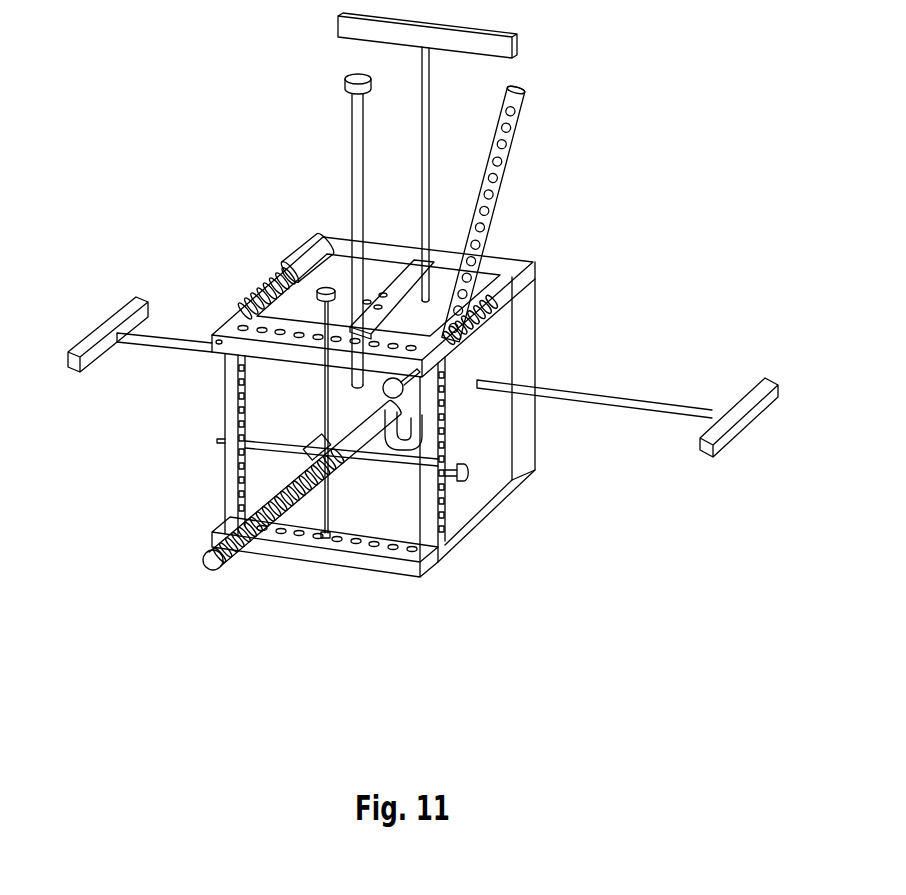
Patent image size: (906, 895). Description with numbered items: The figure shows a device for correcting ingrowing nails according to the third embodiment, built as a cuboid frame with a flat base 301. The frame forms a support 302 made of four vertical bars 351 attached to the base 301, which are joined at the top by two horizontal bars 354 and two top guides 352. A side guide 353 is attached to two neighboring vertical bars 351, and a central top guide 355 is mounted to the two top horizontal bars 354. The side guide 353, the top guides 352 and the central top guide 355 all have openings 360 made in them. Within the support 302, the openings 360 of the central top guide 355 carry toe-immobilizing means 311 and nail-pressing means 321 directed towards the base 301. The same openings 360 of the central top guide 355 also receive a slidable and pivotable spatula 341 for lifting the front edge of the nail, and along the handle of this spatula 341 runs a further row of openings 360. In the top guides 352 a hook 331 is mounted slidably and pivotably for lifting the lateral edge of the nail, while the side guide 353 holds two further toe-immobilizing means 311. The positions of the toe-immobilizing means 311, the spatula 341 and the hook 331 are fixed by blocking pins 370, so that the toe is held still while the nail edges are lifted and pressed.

The flat base 301 is at (455, 493).
The support 302 is at (343, 252).
The toe-immobilizing means 311 is at (607, 398).
The nail-pressing means 321 is at (358, 212).
The hook 331 is at (483, 235).
The spatula 341 is at (222, 533).
The vertical bars 351 is at (520, 340).
The top guides 352 is at (490, 315).
The side guide 353 is at (430, 430).
The horizontal bars 354 is at (317, 247).
The central top guide 355 is at (293, 273).
The openings 360 is at (443, 520).
The blocking pins 370 is at (327, 448).